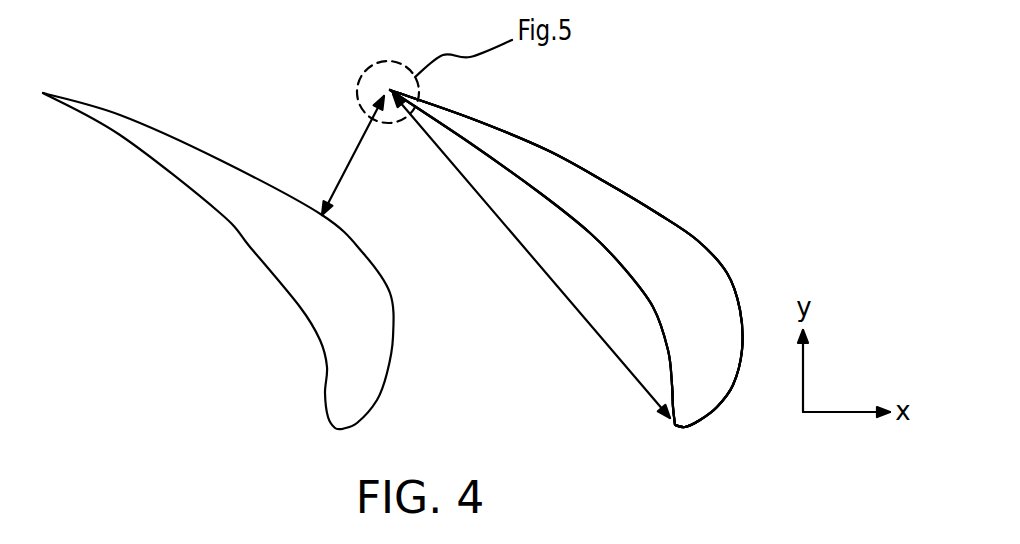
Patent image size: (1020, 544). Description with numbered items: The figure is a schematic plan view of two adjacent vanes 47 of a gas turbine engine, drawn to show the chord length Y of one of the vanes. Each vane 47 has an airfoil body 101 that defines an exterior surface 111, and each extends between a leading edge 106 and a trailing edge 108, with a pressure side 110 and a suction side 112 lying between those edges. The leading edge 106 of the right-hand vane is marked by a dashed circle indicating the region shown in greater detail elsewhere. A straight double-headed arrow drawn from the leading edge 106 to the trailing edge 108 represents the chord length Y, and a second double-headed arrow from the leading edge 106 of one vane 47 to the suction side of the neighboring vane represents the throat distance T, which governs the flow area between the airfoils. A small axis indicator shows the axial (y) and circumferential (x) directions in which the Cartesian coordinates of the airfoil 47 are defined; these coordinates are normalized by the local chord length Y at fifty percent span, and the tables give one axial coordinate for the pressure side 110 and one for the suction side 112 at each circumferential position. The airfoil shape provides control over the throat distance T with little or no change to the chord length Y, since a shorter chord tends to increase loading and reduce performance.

The vane 47 is at (653, 167).
The airfoil body 101 is at (732, 290).
The leading edge 106 is at (682, 430).
The trailing edge 108 is at (385, 88).
The pressure side 110 is at (573, 240).
The exterior surface 111 is at (552, 152).
The suction side 112 is at (700, 237).
The throat distance T is at (347, 160).
The chord length Y is at (590, 328).